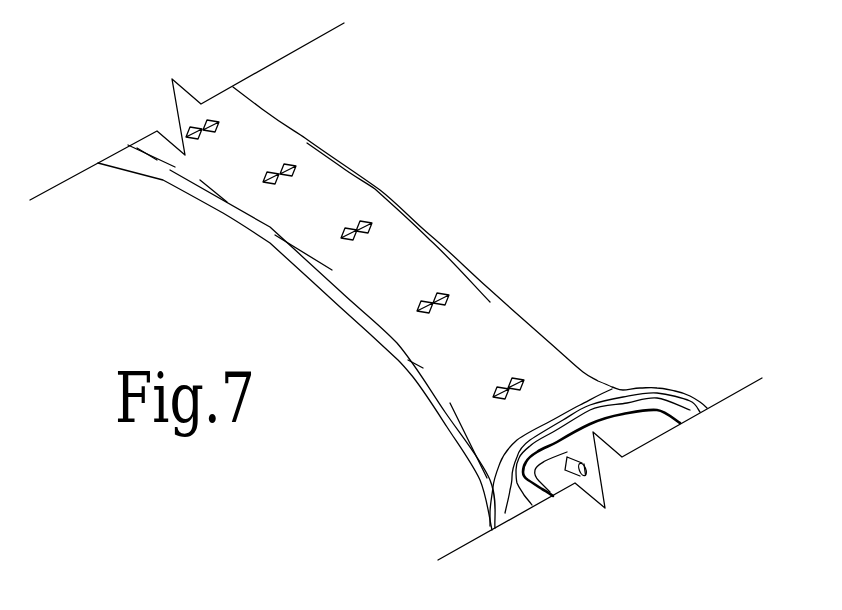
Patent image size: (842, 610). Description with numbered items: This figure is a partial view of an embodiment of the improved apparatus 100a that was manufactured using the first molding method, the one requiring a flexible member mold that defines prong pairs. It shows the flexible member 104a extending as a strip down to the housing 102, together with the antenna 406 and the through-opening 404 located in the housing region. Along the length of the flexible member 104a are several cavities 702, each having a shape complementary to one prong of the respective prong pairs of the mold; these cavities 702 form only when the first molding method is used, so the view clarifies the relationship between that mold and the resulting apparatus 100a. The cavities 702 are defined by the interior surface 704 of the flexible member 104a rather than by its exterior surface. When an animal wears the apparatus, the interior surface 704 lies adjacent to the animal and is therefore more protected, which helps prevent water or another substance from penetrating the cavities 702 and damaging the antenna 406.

The improved apparatus 100a is at (590, 197).
The flexible member 104a is at (422, 260).
The cavities 702 is at (553, 305).
The interior surface 704 is at (360, 288).
The housing 102 is at (637, 428).
The through-opening 404 is at (565, 466).
The antenna 406 is at (592, 469).